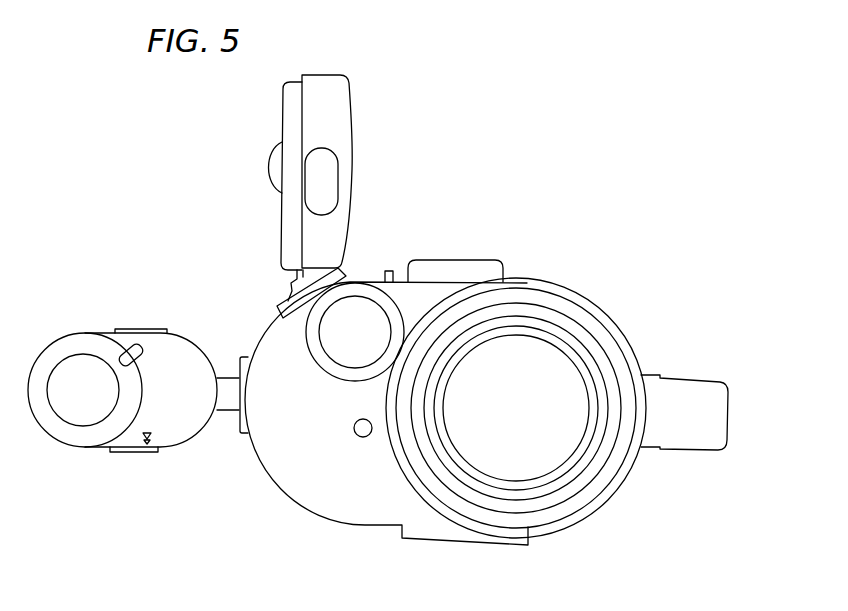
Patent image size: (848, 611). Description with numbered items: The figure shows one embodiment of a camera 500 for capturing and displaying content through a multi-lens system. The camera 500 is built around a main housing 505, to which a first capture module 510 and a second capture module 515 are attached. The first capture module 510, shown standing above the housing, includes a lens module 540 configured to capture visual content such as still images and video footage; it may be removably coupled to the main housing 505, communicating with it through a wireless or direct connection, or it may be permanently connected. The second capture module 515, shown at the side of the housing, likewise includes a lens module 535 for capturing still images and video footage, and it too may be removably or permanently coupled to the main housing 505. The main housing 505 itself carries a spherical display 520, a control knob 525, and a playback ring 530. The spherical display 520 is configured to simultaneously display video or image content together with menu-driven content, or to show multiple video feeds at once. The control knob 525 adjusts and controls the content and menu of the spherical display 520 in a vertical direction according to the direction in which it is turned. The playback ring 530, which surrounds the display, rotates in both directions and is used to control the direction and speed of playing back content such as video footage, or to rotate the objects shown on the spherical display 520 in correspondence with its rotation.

The camera 500 is at (622, 282).
The main housing 505 is at (326, 518).
The first capture module 510 is at (350, 110).
The second capture module 515 is at (150, 328).
The spherical display 520 is at (507, 333).
The control knob 525 is at (730, 394).
The playback ring 530 is at (555, 523).
The lens module 535 is at (82, 420).
The lens module 540 is at (268, 155).